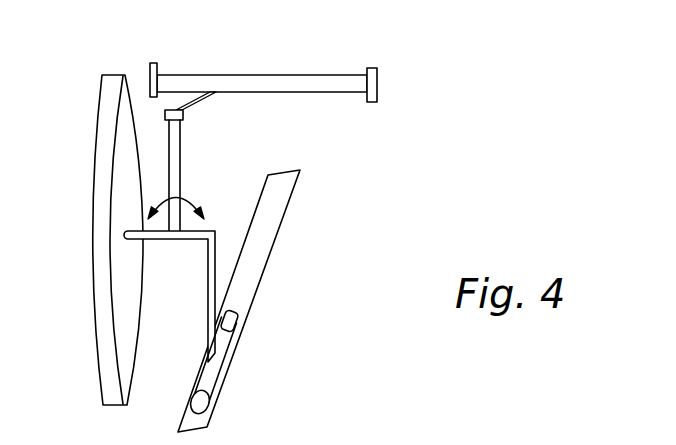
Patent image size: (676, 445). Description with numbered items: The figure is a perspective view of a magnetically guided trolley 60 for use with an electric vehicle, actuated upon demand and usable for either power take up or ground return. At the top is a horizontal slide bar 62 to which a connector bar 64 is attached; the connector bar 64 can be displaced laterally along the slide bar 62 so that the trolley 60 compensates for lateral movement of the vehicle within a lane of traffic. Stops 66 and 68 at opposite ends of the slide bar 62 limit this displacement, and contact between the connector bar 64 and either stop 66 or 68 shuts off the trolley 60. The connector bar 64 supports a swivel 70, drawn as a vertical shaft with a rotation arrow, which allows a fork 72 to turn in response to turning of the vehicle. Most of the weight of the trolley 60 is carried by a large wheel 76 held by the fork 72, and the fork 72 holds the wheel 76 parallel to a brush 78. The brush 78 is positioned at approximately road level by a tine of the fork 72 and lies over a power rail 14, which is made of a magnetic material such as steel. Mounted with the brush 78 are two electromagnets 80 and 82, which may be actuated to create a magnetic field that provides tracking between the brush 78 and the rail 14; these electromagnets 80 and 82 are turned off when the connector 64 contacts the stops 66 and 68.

The power rail 14 is at (277, 210).
The trolley 60 is at (404, 141).
The slide bar 62 is at (308, 78).
The connector bar 64 is at (200, 95).
The stop 66 is at (377, 64).
The stop 68 is at (155, 63).
The swivel 70 is at (176, 163).
The fork 72 is at (213, 278).
The wheel 76 is at (97, 273).
The brush 78 is at (228, 354).
The electromagnet 80 is at (236, 318).
The electromagnet 82 is at (205, 404).